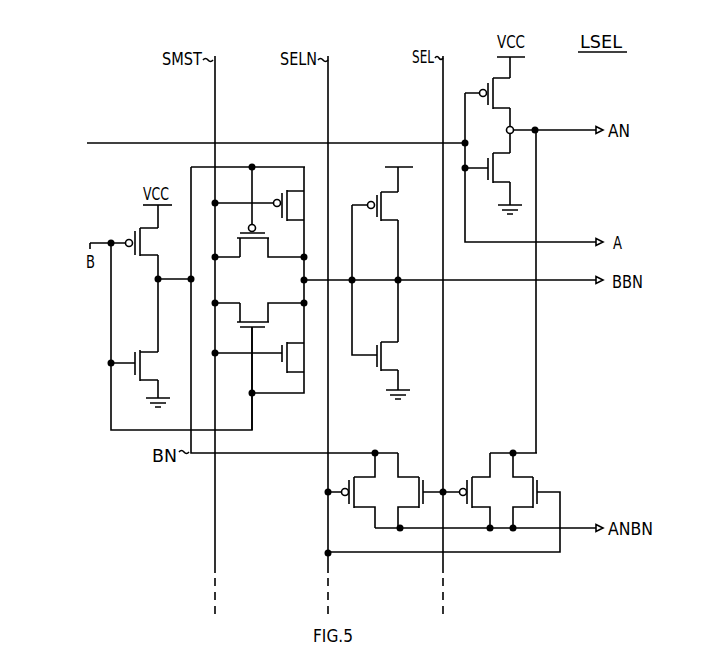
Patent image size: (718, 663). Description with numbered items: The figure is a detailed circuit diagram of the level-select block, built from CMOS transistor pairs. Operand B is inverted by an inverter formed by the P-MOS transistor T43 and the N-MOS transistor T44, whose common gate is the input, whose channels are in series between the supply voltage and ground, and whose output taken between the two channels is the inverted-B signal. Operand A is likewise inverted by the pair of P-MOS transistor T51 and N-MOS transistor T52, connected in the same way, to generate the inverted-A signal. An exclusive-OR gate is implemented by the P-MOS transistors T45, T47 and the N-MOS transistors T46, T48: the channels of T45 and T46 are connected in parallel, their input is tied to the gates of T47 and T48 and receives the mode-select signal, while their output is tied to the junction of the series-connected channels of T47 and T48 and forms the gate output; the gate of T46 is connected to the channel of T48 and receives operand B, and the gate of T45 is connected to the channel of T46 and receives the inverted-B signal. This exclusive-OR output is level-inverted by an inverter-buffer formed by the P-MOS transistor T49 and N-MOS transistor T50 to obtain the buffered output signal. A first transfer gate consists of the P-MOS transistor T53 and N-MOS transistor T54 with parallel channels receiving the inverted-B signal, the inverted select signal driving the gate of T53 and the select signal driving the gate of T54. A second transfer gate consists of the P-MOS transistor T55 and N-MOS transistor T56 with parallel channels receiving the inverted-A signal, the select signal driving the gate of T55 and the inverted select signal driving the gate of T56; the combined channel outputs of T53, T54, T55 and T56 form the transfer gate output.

The P-MOS transistor T43 is at (149, 242).
The N-MOS transistor T44 is at (143, 366).
The P-MOS transistor T45 is at (270, 243).
The N-MOS transistor T46 is at (268, 316).
The P-MOS transistor T47 is at (289, 208).
The N-MOS transistor T48 is at (289, 358).
The P-MOS transistor T49 is at (382, 208).
The N-MOS transistor T50 is at (382, 359).
The P-MOS transistor T51 is at (495, 95).
The N-MOS transistor T52 is at (495, 172).
The P-MOS transistor T53 is at (357, 496).
The N-MOS transistor T54 is at (420, 479).
The P-MOS transistor T55 is at (478, 479).
The N-MOS transistor T56 is at (532, 496).